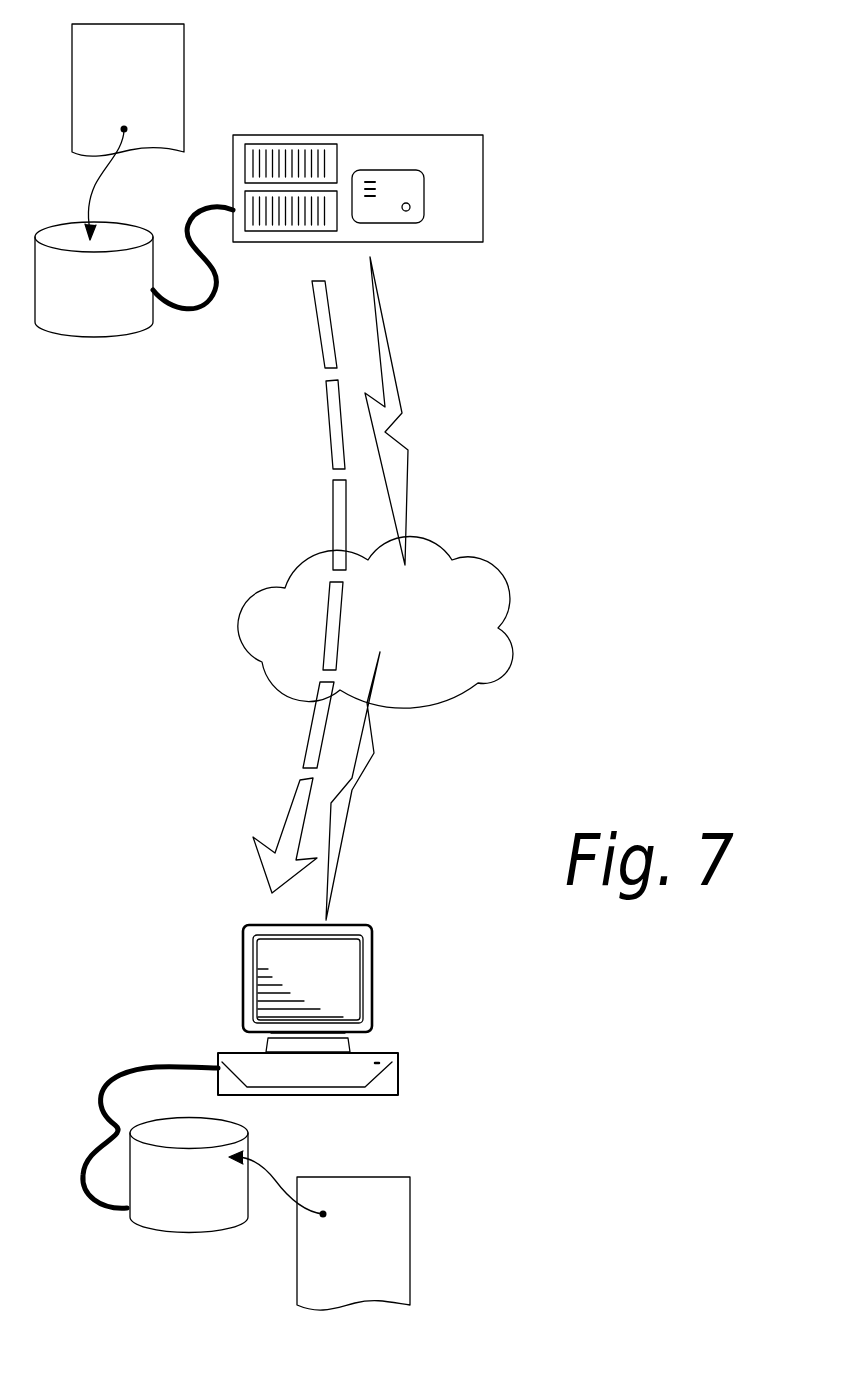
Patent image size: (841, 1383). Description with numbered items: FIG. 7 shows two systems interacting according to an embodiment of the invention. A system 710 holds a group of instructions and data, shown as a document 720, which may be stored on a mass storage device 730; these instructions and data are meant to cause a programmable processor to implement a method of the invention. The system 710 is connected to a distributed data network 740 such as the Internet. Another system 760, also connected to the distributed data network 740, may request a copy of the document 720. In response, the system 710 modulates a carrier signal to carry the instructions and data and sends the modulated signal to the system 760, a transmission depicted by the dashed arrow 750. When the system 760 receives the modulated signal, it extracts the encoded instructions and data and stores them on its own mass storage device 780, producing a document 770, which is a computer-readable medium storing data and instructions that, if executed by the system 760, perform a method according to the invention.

The system 710 is at (468, 242).
The document 720 is at (184, 48).
The mass storage device 730 is at (145, 320).
The distributed data network 740 is at (483, 661).
The dashed arrow 750 is at (333, 487).
The system 760 is at (388, 1048).
The document 770 is at (410, 1282).
The mass storage device 780 is at (238, 1215).